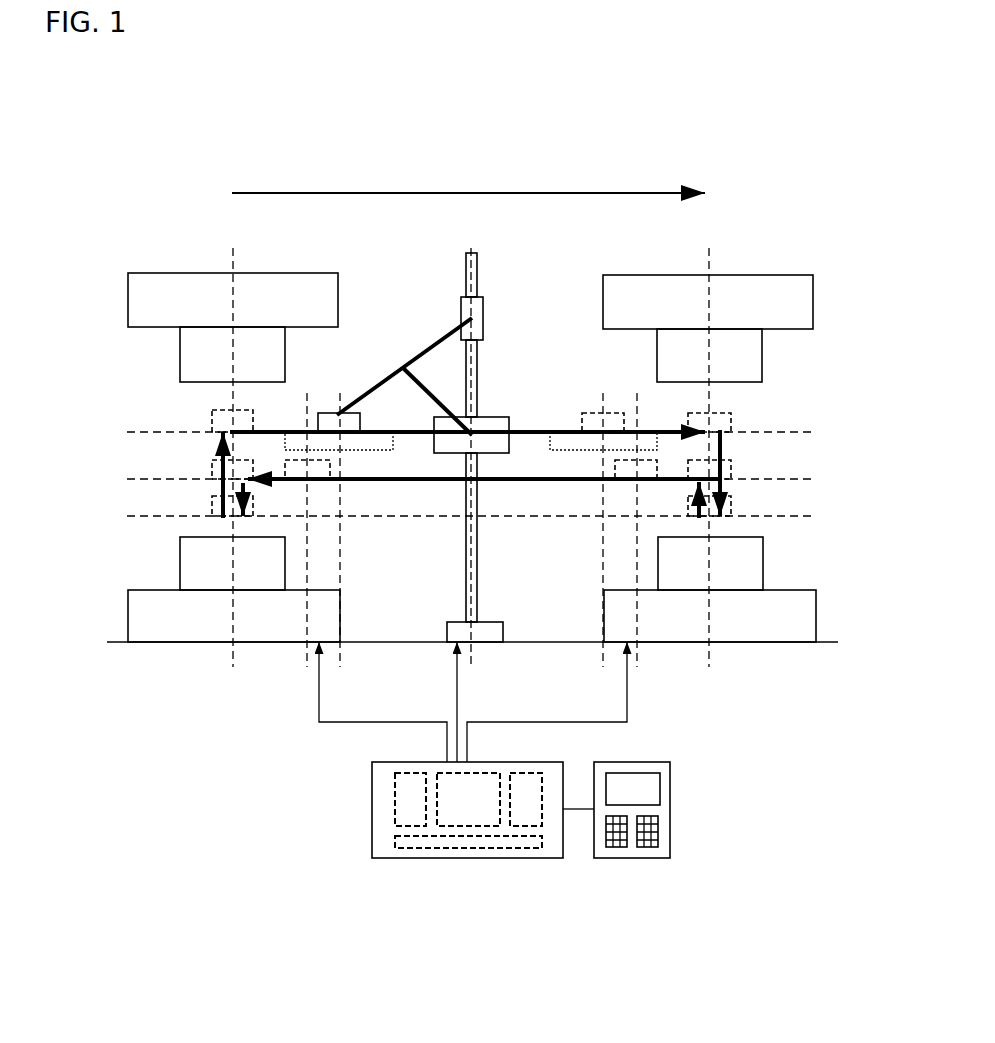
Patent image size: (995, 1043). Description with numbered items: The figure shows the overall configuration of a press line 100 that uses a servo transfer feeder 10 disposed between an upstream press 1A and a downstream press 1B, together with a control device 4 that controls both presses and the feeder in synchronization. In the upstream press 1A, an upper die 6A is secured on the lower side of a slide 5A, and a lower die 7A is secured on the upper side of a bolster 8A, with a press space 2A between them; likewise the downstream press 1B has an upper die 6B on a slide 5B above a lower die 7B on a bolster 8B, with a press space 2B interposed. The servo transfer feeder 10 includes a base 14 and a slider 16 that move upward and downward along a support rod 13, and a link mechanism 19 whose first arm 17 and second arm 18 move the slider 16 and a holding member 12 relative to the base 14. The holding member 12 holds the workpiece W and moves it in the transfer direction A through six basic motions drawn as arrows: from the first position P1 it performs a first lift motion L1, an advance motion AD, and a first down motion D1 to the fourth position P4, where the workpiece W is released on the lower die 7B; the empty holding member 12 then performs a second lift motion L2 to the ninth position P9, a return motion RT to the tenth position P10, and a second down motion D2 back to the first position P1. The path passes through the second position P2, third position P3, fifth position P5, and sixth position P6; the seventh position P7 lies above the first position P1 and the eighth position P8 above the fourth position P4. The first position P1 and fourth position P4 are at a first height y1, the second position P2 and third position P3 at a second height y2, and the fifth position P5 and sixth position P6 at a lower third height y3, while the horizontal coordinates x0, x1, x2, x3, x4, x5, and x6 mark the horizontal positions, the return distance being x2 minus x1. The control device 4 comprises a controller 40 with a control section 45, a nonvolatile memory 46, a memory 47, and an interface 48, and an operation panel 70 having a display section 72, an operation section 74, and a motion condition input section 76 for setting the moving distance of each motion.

The upstream press 1A is at (209, 295).
The downstream press 1B is at (728, 295).
The press space 2A is at (215, 510).
The press space 2B is at (728, 515).
The slide 5A is at (128, 298).
The slide 5B is at (806, 300).
The upper die 6A is at (180, 357).
The upper die 6B is at (755, 355).
The lower die 7A is at (180, 565).
The lower die 7B is at (737, 564).
The bolster 8A is at (158, 616).
The bolster 8B is at (783, 620).
The press line 100 is at (402, 257).
The servo transfer feeder 10 is at (437, 422).
The holding member 12 is at (355, 419).
The support rod 13 is at (478, 568).
The base 14 is at (478, 412).
The slider 16 is at (483, 312).
The first arm 17 is at (420, 377).
The second arm 18 is at (425, 348).
The link mechanism 19 is at (385, 368).
The control device 4 is at (521, 775).
The controller 40 is at (528, 858).
The control section 45 is at (482, 772).
The nonvolatile memory 46 is at (395, 788).
The memory 47 is at (525, 772).
The interface 48 is at (440, 850).
The operation panel 70 is at (648, 858).
The display section 72 is at (660, 785).
The operation section 74 is at (660, 832).
The motion condition input section 76 is at (612, 848).
The transfer direction A is at (510, 193).
The first down motion D1 is at (723, 445).
The second down motion D2 is at (250, 485).
The first lift motion L1 is at (218, 482).
The second lift motion L2 is at (693, 510).
The workpiece W is at (390, 442).
The return motion RT is at (508, 478).
The advance motion AD is at (547, 432).
The first position P1 is at (212, 508).
The second position P2 is at (333, 428).
The third position P3 is at (610, 430).
The fourth position P4 is at (708, 517).
The fifth position P5 is at (613, 480).
The sixth position P6 is at (308, 477).
The seventh position P7 is at (230, 428).
The eighth position P8 is at (715, 428).
The ninth position P9 is at (717, 478).
The tenth position P10 is at (235, 478).
The x coordinate x0 is at (474, 471).
The horizontal coordinate x1 is at (233, 471).
The horizontal coordinate x2 is at (710, 471).
The x coordinate x3 is at (339, 543).
The x coordinate x4 is at (605, 543).
The x coordinate x5 is at (645, 543).
The x coordinate x6 is at (300, 543).
The first height y1 is at (456, 514).
The second height y2 is at (456, 430).
The third height y3 is at (456, 477).